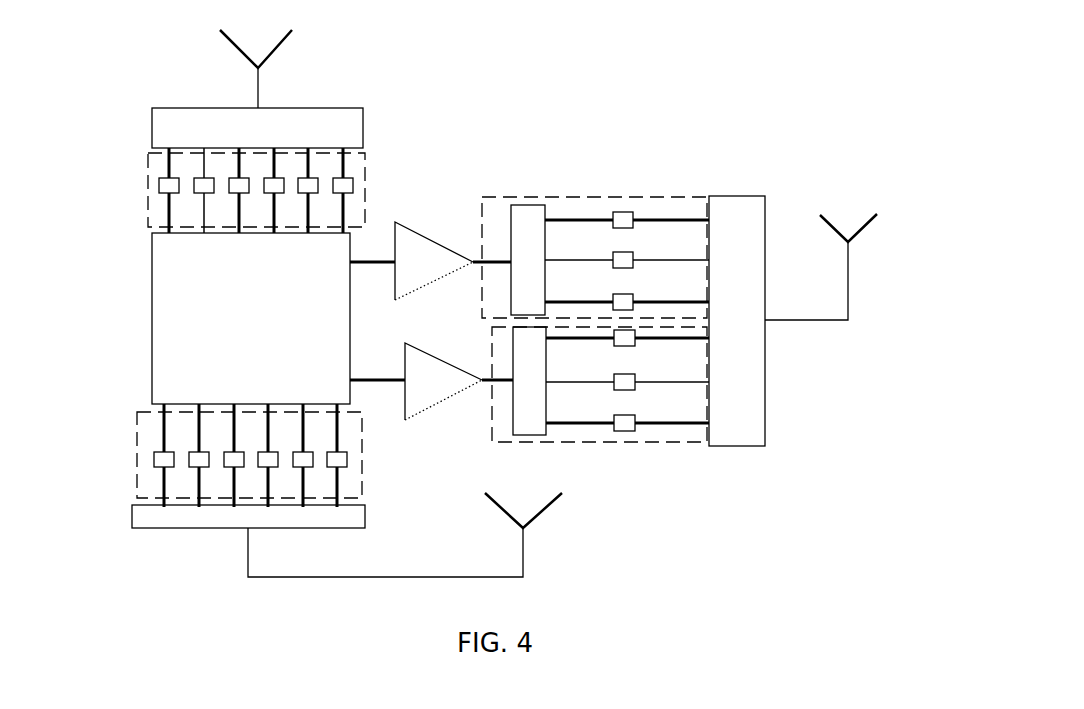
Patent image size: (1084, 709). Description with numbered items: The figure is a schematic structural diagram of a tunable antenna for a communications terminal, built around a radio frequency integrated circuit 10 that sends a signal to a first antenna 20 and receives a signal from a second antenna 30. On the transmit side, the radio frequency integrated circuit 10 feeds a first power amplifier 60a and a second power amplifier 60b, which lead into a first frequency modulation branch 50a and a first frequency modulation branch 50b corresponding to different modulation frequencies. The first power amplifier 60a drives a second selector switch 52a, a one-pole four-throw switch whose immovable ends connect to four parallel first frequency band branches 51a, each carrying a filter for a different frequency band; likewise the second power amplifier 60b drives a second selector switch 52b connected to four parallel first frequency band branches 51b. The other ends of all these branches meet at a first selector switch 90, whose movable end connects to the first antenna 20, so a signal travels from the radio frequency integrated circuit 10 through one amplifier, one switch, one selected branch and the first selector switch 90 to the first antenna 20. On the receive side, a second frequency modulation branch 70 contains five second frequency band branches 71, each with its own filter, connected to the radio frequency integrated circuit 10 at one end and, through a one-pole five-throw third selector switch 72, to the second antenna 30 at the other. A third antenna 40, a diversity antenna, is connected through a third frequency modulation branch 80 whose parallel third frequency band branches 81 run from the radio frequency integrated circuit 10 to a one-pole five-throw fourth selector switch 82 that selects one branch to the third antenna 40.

The radio frequency integrated circuit 10 is at (251, 318).
The first antenna 20 is at (853, 312).
The second antenna 30 is at (293, 35).
The third antenna 40 is at (537, 517).
The first frequency modulation branch 50a is at (688, 196).
The first frequency modulation branch 50b is at (688, 443).
The first frequency band branch 51a is at (625, 210).
The first frequency band branch 51b is at (628, 432).
The second selector switch 52a is at (530, 212).
The second selector switch 52b is at (542, 429).
The first power amplifier 60a is at (425, 247).
The second power amplifier 60b is at (435, 400).
The second frequency modulation branch 70 is at (150, 218).
The second frequency band branch 71 is at (160, 183).
The third selector switch 72 is at (352, 118).
The third frequency modulation branch 80 is at (138, 466).
The third frequency band branch 81 is at (160, 460).
The fourth selector switch 82 is at (182, 523).
The first selector switch 90 is at (760, 384).